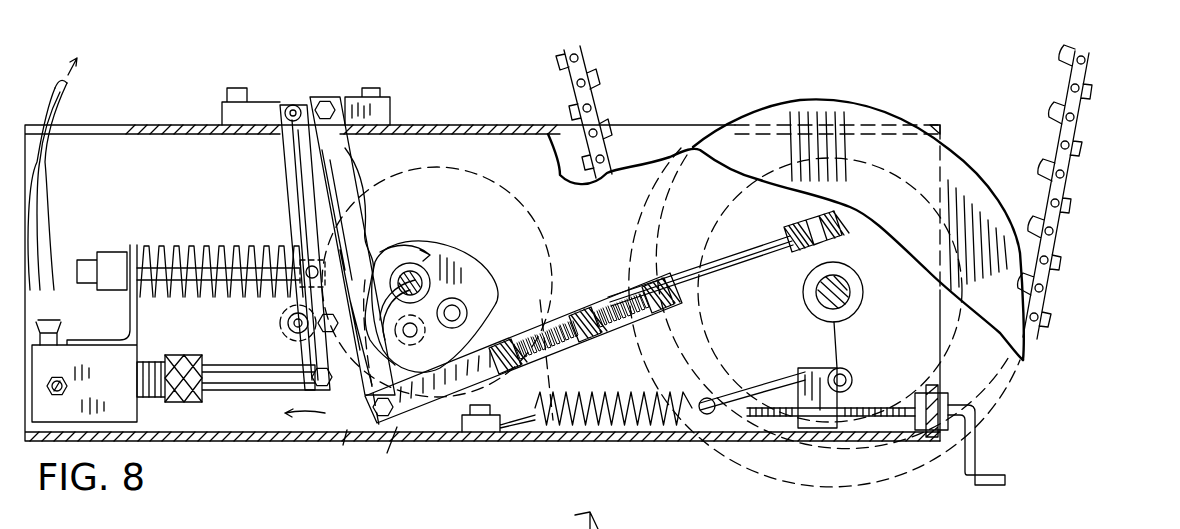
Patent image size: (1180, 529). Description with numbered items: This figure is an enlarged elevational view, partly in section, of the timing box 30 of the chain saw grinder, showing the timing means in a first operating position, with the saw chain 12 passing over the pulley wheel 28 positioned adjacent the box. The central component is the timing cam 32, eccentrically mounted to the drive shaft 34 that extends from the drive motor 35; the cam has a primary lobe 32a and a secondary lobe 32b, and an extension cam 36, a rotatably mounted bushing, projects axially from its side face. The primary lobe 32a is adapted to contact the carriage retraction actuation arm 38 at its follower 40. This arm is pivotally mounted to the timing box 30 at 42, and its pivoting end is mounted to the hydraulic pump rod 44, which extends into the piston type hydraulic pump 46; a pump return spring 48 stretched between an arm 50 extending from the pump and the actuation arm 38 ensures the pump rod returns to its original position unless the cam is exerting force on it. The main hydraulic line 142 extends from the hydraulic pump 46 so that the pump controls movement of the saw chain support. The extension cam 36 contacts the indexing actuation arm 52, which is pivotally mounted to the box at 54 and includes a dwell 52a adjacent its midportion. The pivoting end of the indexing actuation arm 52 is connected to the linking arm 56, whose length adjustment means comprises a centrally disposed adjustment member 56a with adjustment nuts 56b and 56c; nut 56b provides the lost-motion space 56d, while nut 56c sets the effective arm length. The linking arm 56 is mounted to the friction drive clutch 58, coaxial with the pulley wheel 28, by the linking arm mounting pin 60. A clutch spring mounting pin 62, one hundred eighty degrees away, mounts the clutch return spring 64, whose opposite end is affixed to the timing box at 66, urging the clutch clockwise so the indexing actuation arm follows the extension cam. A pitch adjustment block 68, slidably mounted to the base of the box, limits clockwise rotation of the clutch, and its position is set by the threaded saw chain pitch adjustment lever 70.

The saw chain 12 is at (1075, 168).
The pulley wheel 28 is at (980, 170).
The timing box 30 is at (682, 125).
The timing cam 32 is at (425, 300).
The primary lobe 32a is at (368, 450).
The secondary lobe 32b is at (522, 292).
The drive shaft 34 is at (421, 339).
The drive motor 35 is at (503, 200).
The extension cam 36 is at (465, 303).
The carriage retraction actuation arm 38 is at (290, 187).
The follower 40 is at (288, 326).
The pivot mounting 42 is at (292, 104).
The hydraulic pump rod 44 is at (240, 385).
The hydraulic pump 46 is at (114, 390).
The pump return spring 48 is at (175, 246).
The arm 50 is at (135, 246).
The indexing actuation arm 52 is at (345, 148).
The dwell 52a is at (383, 243).
The pivot mounting 54 is at (328, 102).
The linking arm 56 is at (615, 325).
The adjustment member 56a is at (743, 250).
The adjustment nut 56b is at (545, 357).
The adjustment nut 56c is at (810, 255).
The space 56d is at (547, 327).
The friction drive clutch 58 is at (848, 160).
The linking arm mounting pin 60 is at (840, 236).
The clutch spring mounting pin 62 is at (852, 380).
The clutch return spring 64 is at (652, 427).
The spring attachment point 66 is at (483, 428).
The pitch adjustment block 68 is at (820, 430).
The saw chain pitch adjustment lever 70 is at (1000, 470).
The main hydraulic line 142 is at (47, 144).